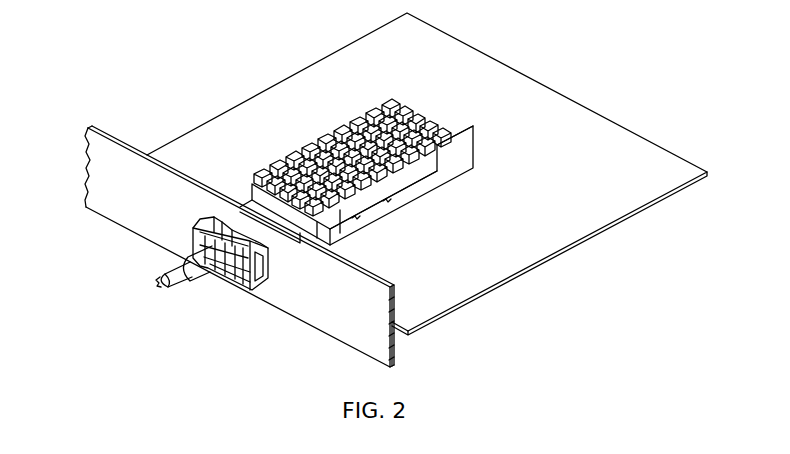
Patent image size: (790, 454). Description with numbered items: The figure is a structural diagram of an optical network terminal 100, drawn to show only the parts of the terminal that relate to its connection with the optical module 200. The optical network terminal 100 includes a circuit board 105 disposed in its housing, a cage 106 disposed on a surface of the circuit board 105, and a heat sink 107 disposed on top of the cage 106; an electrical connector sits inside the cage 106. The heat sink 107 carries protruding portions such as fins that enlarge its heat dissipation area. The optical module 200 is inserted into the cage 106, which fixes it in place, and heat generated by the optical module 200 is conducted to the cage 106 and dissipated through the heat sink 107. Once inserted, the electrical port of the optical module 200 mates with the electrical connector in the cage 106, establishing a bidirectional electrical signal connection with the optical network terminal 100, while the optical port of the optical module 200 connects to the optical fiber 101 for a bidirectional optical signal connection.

The optical network terminal 100 is at (217, 83).
The optical fiber 101 is at (182, 265).
The circuit board 105 is at (452, 283).
The cage 106 is at (412, 185).
The heat sink 107 is at (330, 143).
The optical module 200 is at (263, 272).